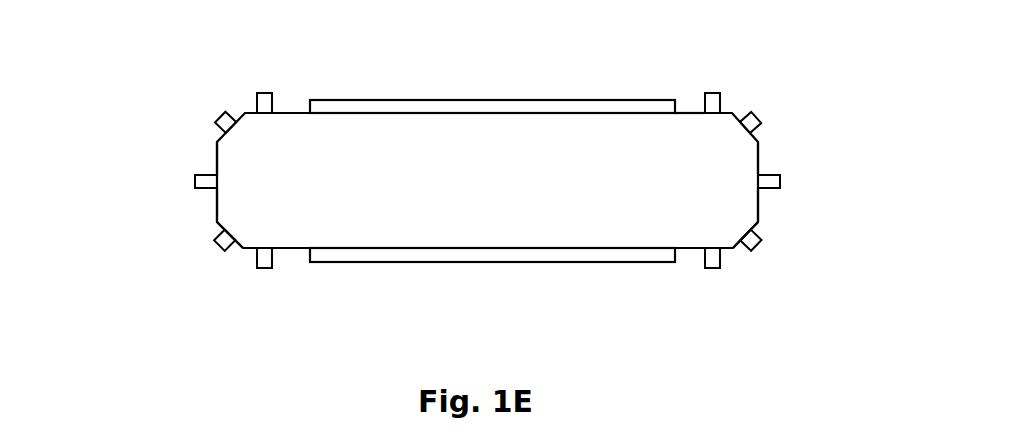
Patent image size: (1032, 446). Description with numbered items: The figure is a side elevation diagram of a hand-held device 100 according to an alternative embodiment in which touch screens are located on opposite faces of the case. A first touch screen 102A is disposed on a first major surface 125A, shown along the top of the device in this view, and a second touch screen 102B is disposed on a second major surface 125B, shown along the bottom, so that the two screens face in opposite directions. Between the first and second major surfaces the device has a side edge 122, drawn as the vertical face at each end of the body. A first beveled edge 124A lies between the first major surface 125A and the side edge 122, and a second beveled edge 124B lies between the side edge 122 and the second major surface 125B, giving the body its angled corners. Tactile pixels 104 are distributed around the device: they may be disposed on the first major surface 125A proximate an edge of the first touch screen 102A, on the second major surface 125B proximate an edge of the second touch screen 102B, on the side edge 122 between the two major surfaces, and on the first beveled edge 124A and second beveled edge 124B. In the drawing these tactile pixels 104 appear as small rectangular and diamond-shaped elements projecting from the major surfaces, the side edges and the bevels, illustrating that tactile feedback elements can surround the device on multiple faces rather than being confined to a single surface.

The hand-held device 100 is at (412, 137).
The first touch screen 102A is at (492, 75).
The second touch screen 102B is at (492, 281).
The tactile pixels 104 is at (490, 194).
The side edge 122 is at (488, 222).
The first beveled edge 124A is at (492, 156).
The second beveled edge 124B is at (485, 285).
The first major surface 125A is at (671, 84).
The second major surface 125B is at (312, 278).